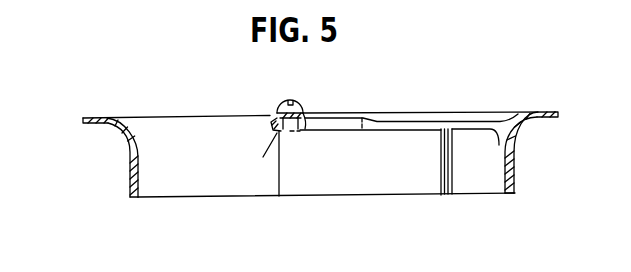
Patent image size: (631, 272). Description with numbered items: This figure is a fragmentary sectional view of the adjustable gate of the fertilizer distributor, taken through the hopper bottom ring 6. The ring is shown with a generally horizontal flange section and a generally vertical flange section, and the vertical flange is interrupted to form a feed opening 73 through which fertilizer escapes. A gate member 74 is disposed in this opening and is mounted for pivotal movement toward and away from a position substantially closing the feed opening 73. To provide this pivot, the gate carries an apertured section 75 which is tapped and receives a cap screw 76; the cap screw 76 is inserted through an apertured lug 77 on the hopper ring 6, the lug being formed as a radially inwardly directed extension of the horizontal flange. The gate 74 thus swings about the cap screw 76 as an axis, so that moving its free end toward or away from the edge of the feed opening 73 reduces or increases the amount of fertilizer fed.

The hopper bottom ring 6 is at (185, 117).
The feed opening 73 is at (449, 163).
The gate member 74 is at (373, 188).
The apertured section 75 is at (308, 123).
The cap screw 76 is at (281, 100).
The apertured lug 77 is at (306, 114).